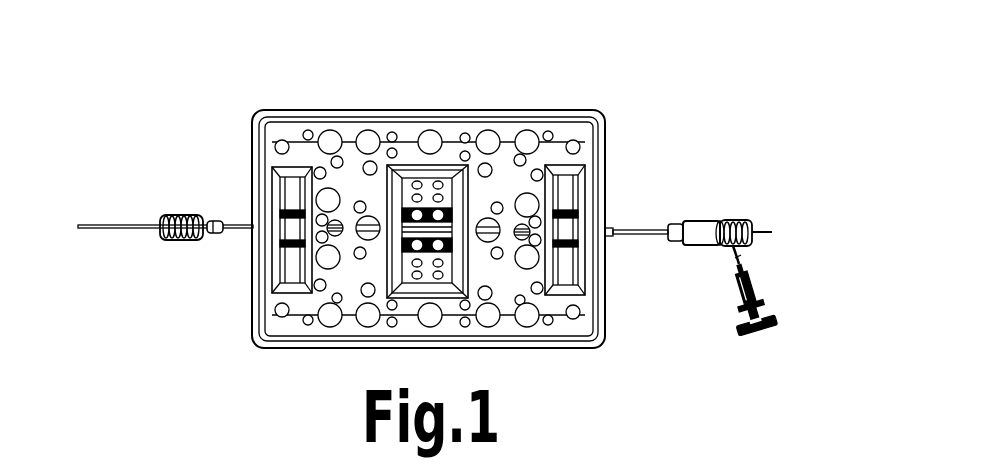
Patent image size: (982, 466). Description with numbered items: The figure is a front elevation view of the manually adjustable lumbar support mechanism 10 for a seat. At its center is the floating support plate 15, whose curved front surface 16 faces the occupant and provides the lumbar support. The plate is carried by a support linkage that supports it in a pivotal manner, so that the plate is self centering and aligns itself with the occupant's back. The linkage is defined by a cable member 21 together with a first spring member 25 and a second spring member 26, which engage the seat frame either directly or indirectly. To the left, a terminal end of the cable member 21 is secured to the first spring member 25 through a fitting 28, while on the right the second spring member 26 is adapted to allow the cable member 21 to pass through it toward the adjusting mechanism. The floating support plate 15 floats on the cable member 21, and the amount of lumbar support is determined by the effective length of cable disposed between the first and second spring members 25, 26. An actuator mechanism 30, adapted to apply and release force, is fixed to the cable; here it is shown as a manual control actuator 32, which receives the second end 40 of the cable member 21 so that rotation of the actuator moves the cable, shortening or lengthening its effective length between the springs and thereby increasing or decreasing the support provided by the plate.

The fishing lure assembly 10 is at (314, 70).
The floating support plate 15 is at (445, 103).
The curved front surface 16 is at (503, 166).
The cable member 21 is at (240, 226).
The first spring member 25 is at (172, 213).
The fitting 28 is at (222, 233).
The second spring member 26 is at (745, 220).
The second end of the cable member 40 is at (750, 268).
The actuator mechanism 30 is at (797, 268).
The manual control actuator 32 is at (775, 354).